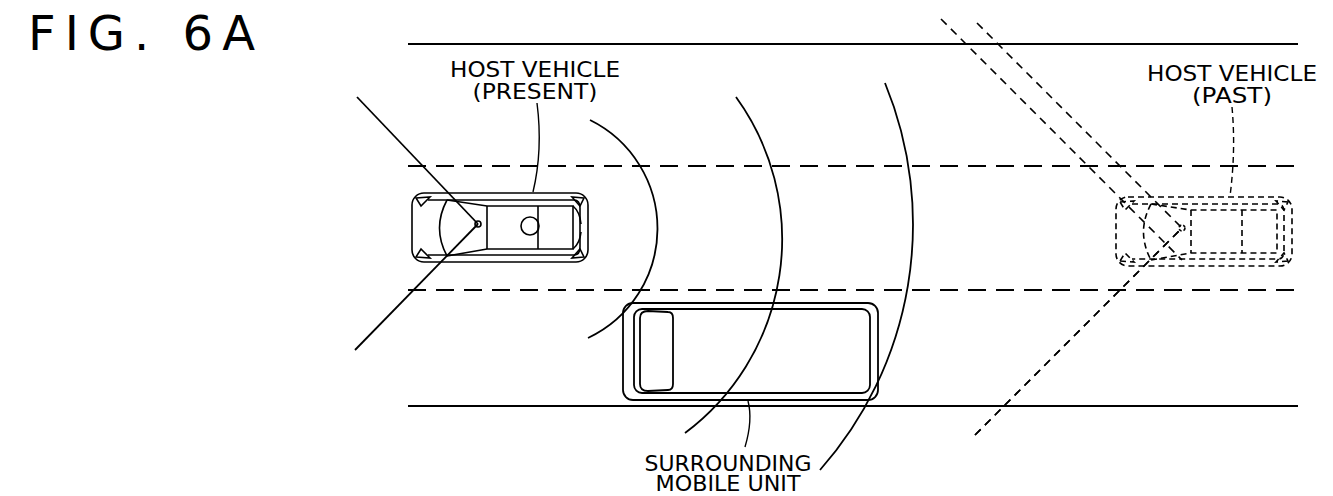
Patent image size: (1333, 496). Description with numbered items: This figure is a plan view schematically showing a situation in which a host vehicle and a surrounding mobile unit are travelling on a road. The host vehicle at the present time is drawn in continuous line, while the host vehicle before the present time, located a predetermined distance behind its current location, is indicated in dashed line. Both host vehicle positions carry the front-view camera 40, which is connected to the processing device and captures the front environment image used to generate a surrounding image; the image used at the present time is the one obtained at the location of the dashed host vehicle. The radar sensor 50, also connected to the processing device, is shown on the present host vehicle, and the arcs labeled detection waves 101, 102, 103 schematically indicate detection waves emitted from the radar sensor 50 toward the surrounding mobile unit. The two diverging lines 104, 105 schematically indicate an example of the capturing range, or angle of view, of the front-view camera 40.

The front-view camera 40 is at (478, 220).
The radar sensor 50 is at (530, 233).
The detection wave 101 is at (657, 222).
The detection wave 102 is at (782, 222).
The detection wave 103 is at (913, 222).
The capturing range 104 is at (378, 325).
The capturing range 105 is at (398, 137).